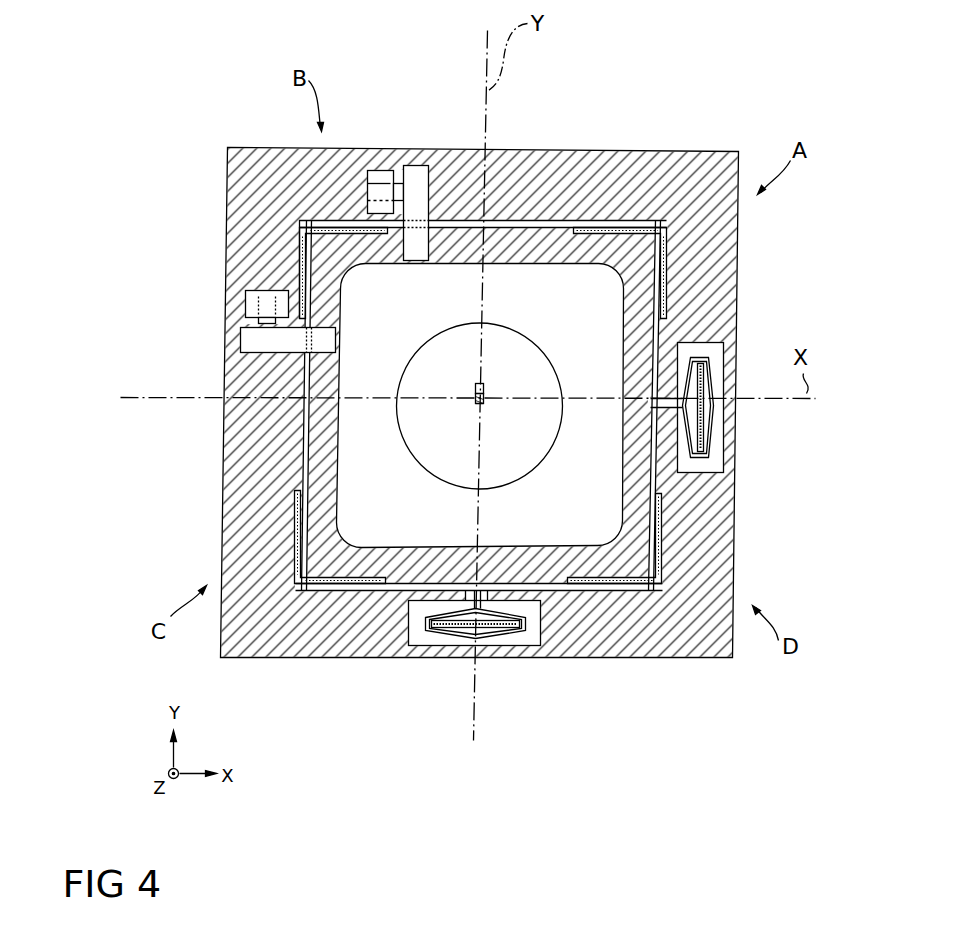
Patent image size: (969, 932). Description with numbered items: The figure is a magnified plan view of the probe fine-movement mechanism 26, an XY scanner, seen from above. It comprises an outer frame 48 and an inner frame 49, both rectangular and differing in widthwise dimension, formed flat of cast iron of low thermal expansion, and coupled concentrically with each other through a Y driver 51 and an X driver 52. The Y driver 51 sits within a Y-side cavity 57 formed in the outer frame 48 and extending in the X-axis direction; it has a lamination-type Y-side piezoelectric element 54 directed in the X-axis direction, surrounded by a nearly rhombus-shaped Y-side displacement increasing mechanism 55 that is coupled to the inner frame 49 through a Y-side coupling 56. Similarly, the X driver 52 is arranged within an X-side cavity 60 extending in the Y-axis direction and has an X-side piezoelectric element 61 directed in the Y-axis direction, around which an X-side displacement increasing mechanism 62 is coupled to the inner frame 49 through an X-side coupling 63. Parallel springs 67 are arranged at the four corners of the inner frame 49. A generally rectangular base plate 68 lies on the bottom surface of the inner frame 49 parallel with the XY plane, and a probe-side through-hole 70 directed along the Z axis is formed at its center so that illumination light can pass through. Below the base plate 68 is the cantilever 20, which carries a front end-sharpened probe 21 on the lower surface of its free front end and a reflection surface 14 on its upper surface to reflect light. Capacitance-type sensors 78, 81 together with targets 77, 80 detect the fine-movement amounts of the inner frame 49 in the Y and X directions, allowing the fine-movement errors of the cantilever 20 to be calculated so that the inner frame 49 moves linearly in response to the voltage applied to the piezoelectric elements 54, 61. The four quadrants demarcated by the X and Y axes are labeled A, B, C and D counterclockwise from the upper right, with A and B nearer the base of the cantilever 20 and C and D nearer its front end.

The reflection surface 14 is at (484, 404).
The cantilever 20 is at (484, 386).
The probe 21 is at (477, 404).
The probe fine-movement mechanism 26 is at (690, 100).
The outer frame 48 is at (706, 658).
The inner frame 49 is at (528, 246).
The Y driver 51 is at (508, 655).
The X driver 52 is at (718, 370).
The Y-side piezoelectric element 54 is at (438, 633).
The Y-side displacement increasing mechanism 55 is at (460, 638).
The Y-side coupling 56 is at (506, 553).
The Y-side cavity 57 is at (411, 641).
The X-side cavity 60 is at (716, 350).
The X-side piezoelectric element 61 is at (701, 430).
The X-side displacement increasing mechanism 62 is at (708, 396).
The X-side coupling 63 is at (657, 345).
The parallel springs 67 is at (606, 229).
The base plate 68 is at (358, 390).
The probe-side through-hole 70 is at (408, 405).
The target 77 is at (252, 338).
The capacitance-type sensor 78 is at (247, 303).
The target 80 is at (421, 165).
The capacitance-type sensor 81 is at (386, 170).